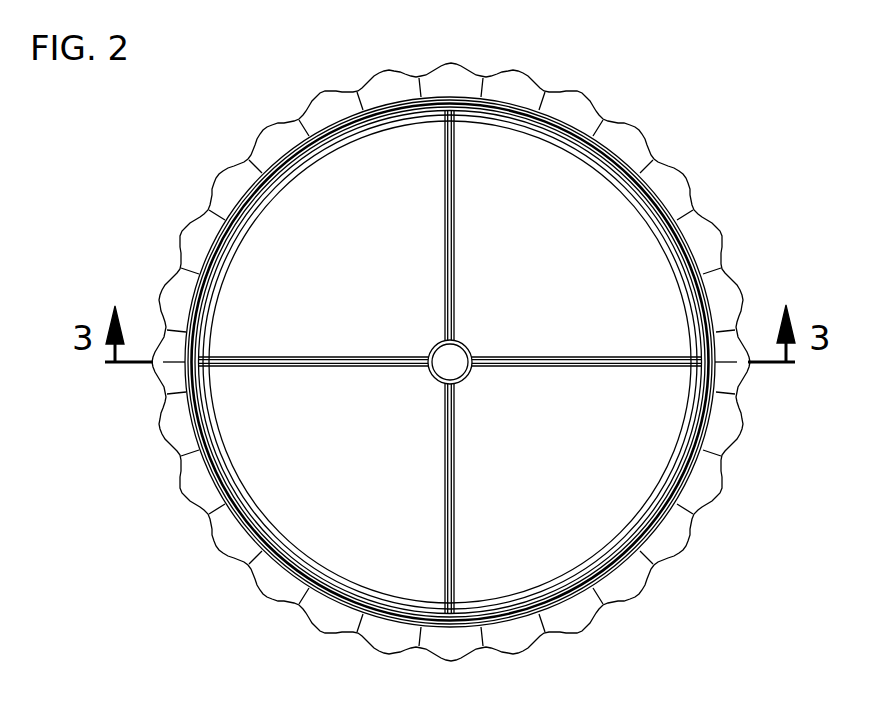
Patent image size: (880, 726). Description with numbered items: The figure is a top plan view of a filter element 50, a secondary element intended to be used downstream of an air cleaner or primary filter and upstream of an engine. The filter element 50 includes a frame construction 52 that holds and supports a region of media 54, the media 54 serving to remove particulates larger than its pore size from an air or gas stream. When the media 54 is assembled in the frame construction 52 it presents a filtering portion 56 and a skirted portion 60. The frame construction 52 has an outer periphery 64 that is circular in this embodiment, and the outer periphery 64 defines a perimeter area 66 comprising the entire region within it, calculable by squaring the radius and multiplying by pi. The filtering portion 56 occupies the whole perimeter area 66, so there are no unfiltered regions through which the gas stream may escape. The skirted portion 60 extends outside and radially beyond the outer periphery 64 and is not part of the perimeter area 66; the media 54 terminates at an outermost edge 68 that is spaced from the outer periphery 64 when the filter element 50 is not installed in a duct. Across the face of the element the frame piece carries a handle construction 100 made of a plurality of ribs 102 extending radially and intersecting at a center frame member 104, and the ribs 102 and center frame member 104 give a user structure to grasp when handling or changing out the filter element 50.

The filter element 50 is at (620, 85).
The frame construction 52 is at (636, 161).
The region of media 54 is at (269, 234).
The filtering portion 56 is at (562, 285).
The skirted portion 60 is at (715, 265).
The outer periphery 64 is at (680, 497).
The perimeter area 66 is at (245, 453).
The outermost edge 68 is at (167, 290).
The handle construction 100 is at (418, 326).
The ribs 102 is at (455, 208).
The center frame member 104 is at (466, 356).